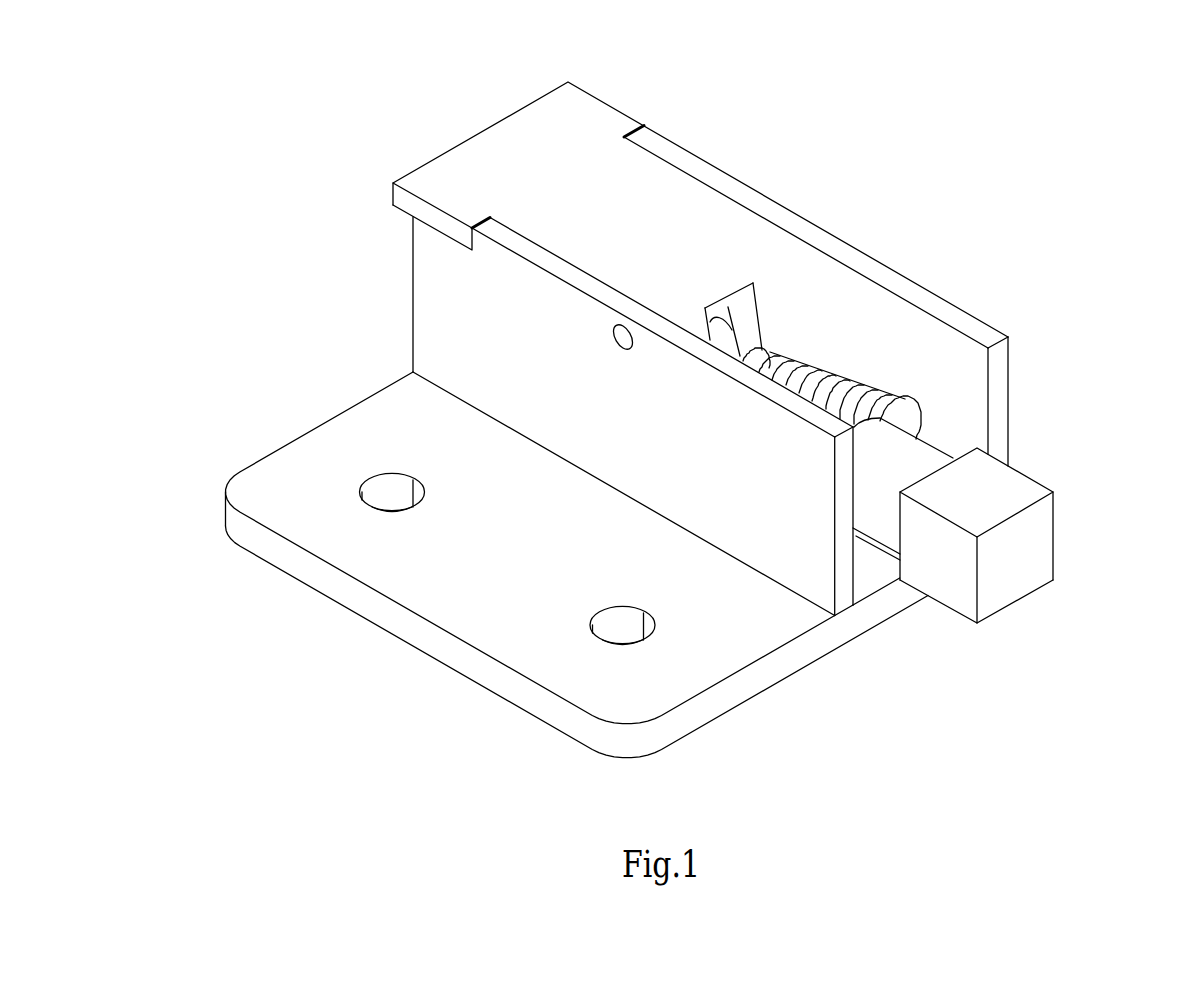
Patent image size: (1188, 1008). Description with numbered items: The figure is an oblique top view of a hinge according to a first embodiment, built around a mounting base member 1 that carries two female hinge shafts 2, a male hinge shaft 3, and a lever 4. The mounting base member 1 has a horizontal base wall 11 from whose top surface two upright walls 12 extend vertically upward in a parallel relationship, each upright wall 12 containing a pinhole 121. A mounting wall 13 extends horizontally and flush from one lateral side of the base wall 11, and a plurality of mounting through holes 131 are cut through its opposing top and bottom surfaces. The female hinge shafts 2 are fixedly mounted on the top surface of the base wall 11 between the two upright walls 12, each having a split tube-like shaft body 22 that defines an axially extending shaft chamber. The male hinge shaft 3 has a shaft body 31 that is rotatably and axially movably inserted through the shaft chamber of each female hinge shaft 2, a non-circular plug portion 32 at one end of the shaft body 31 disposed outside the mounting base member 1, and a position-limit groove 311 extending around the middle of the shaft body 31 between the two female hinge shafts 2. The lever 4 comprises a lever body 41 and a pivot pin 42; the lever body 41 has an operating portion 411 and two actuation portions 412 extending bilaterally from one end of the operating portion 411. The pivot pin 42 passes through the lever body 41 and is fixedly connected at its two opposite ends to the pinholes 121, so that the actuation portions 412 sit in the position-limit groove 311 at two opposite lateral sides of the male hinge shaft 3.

The mounting base member 1 is at (372, 344).
The horizontal base wall 11 is at (876, 570).
The upright wall 12 is at (408, 290).
The pinhole 121 is at (611, 333).
The mounting wall 13 is at (275, 476).
The mounting through hole 131 is at (383, 490).
The female hinge shaft 2 is at (878, 355).
The split tube-like shaft body 22 is at (903, 413).
The male hinge shaft 3 is at (1080, 474).
The shaft body 31 is at (920, 458).
The position-limit groove 311 is at (738, 324).
The non-circular plug portion 32 is at (1047, 530).
The lever 4 is at (428, 132).
The lever body 41 is at (673, 171).
The operating portion 411 is at (527, 125).
The actuation portion 412 is at (788, 322).
The pivot pin 42 is at (618, 347).